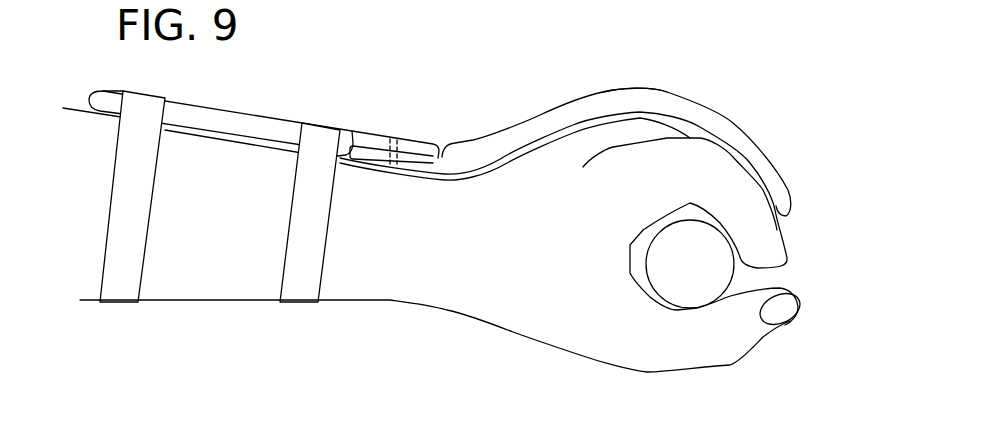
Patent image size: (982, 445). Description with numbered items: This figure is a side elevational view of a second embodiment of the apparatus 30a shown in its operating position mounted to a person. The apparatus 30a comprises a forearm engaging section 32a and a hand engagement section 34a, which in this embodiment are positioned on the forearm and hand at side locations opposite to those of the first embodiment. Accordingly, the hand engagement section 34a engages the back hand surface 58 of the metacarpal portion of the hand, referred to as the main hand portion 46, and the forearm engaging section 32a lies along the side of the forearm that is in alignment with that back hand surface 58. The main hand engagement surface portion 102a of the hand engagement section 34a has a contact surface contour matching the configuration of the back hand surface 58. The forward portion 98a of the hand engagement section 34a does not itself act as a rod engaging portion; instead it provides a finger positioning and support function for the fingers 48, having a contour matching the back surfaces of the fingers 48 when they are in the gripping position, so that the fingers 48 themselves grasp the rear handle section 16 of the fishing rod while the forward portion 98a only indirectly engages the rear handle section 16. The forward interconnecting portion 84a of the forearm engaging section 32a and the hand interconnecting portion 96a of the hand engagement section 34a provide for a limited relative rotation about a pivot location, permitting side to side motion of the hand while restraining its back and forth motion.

The rear handle section 16 is at (686, 292).
The apparatus 30a is at (382, 122).
The forearm engaging section 32a is at (228, 118).
The hand engagement section 34a is at (545, 123).
The main hand portion 46 is at (520, 282).
The fingers 48 is at (703, 163).
The back hand surface 58 is at (530, 155).
The forward interconnecting portion 84a is at (352, 140).
The hand interconnecting portion 96a is at (407, 158).
The forward portion 98a is at (608, 98).
The main hand engagement surface portion 102a is at (512, 162).